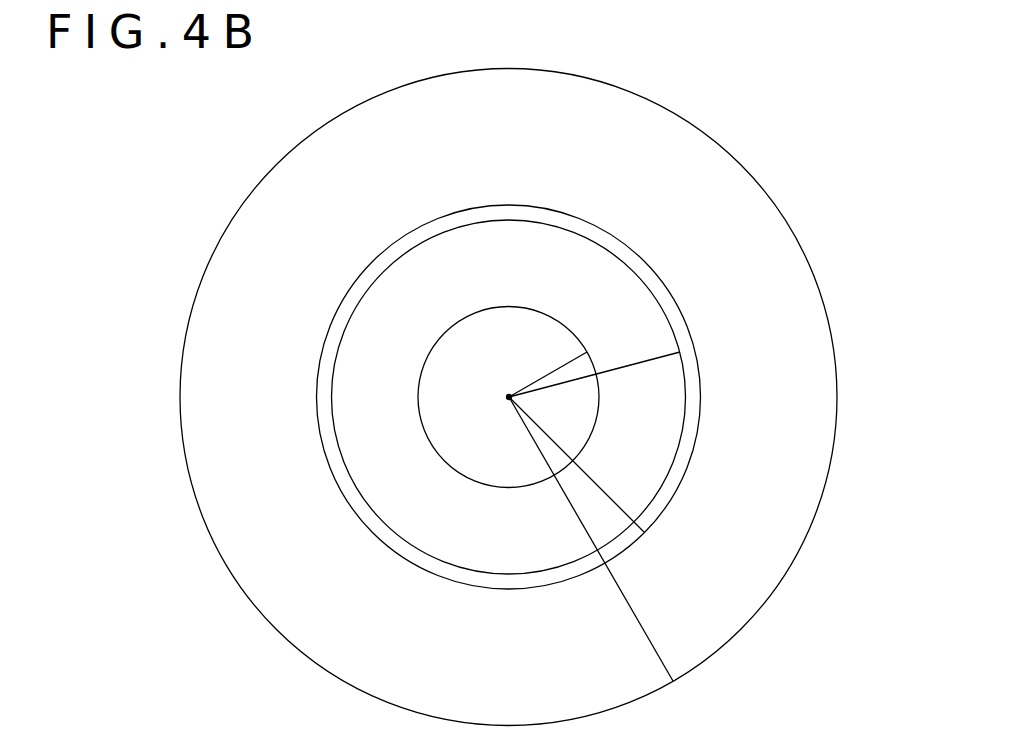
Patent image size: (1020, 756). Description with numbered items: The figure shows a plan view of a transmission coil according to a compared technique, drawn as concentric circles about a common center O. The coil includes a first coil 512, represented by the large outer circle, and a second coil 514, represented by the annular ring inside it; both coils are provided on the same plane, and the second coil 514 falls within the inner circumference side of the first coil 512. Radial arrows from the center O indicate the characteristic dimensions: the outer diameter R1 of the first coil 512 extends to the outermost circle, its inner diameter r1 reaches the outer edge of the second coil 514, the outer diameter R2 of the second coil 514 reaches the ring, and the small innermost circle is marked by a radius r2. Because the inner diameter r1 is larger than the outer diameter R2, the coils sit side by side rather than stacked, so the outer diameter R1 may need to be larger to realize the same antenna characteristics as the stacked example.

The first coil 512 is at (717, 168).
The second coil 514 is at (357, 393).
The center point O is at (508, 397).
The inner diameter of the first coil r1 is at (644, 532).
The radius r2 (inner circle) r2 is at (587, 352).
The outer diameter of the first coil R1 is at (673, 681).
The outer diameter of the second coil R2 is at (680, 352).